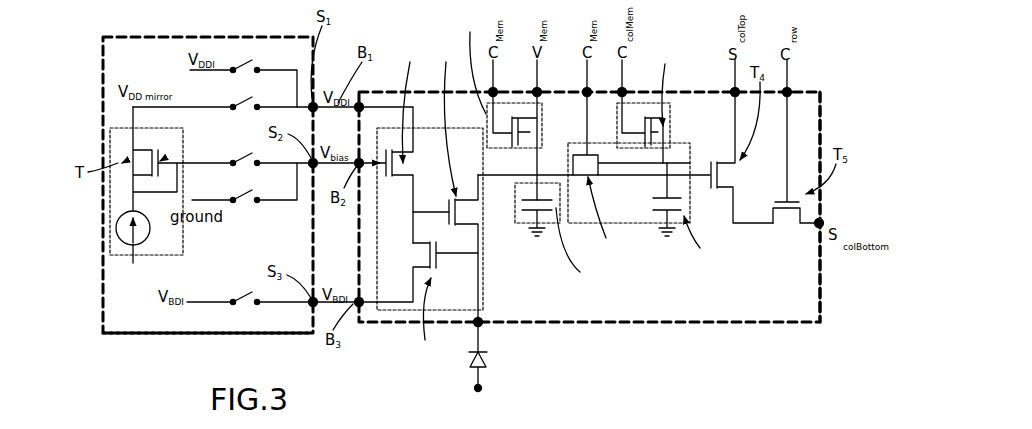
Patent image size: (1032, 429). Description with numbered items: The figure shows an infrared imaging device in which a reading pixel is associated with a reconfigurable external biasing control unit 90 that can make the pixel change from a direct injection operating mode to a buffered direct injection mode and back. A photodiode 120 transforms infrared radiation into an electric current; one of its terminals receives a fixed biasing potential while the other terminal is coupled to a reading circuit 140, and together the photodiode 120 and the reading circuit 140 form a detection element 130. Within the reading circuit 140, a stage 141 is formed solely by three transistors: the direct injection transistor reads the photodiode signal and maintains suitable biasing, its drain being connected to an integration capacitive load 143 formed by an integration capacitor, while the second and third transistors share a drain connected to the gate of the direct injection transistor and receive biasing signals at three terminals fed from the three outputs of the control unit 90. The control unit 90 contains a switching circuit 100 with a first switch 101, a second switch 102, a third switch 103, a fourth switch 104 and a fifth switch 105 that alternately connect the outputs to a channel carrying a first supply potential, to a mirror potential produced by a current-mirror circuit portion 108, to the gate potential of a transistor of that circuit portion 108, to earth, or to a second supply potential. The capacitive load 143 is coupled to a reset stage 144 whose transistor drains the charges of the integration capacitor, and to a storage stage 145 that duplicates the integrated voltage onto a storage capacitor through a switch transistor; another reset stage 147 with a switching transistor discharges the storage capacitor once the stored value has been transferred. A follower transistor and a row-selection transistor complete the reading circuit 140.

The biasing signal control unit 90 is at (125, 336).
The switching circuit 100 is at (120, 62).
The first switch 101 is at (246, 64).
The second switch 102 is at (249, 101).
The third switch 103 is at (250, 157).
The fourth switch 104 is at (250, 194).
The fifth switch 105 is at (250, 296).
The circuit portion 108 is at (112, 258).
The photodiode 120 is at (497, 372).
The detection element 130 is at (670, 344).
The reading circuit 140 is at (809, 328).
The stage 141 is at (396, 318).
The integration capacitive load 143 is at (518, 232).
The reset stage 144 is at (549, 123).
The storage stage 145 is at (640, 230).
The other reset stage 147 is at (676, 134).